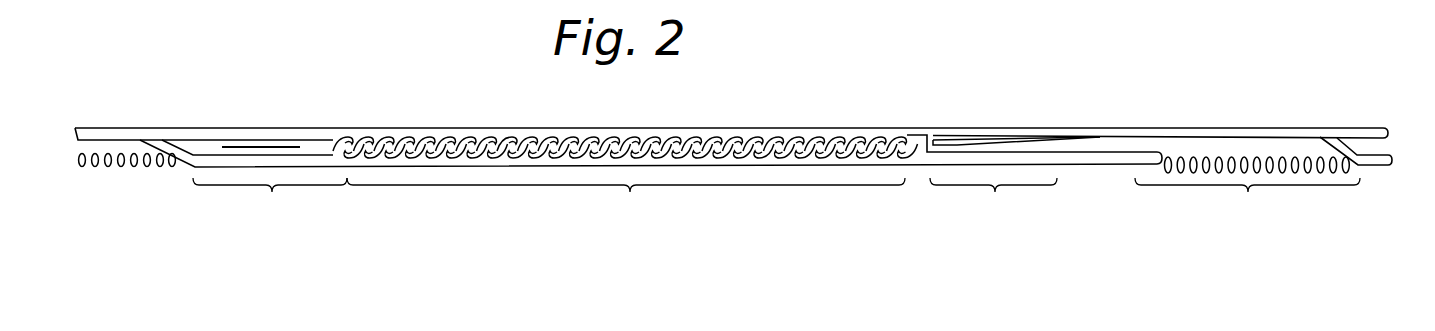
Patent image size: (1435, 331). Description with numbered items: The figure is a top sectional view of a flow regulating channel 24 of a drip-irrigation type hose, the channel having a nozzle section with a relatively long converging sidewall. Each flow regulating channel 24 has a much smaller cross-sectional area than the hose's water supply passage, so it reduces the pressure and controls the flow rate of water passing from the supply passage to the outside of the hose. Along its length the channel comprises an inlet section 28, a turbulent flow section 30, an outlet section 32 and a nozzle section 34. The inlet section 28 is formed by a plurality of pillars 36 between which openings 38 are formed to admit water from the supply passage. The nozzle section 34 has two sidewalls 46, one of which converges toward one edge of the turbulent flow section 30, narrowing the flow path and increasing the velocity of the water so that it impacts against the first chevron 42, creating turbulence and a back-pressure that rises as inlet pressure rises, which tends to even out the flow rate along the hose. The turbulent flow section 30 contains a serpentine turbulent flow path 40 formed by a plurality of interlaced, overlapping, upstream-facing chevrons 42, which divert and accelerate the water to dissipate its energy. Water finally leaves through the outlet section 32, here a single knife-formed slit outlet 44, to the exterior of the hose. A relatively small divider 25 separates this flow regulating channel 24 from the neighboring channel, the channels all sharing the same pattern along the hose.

The flow regulating channel 24 is at (725, 190).
The divider 25 is at (174, 153).
The inlet section 28 is at (1247, 193).
The turbulent flow section 30 is at (626, 203).
The outlet section 32 is at (270, 205).
The nozzle section 34 is at (993, 203).
The pillar 36 is at (1184, 184).
The opening 38 is at (1202, 172).
The turbulent flow path 40 is at (662, 140).
The chevron 42 is at (800, 142).
The slit outlet 44 is at (273, 147).
The sidewall 46 is at (956, 147).